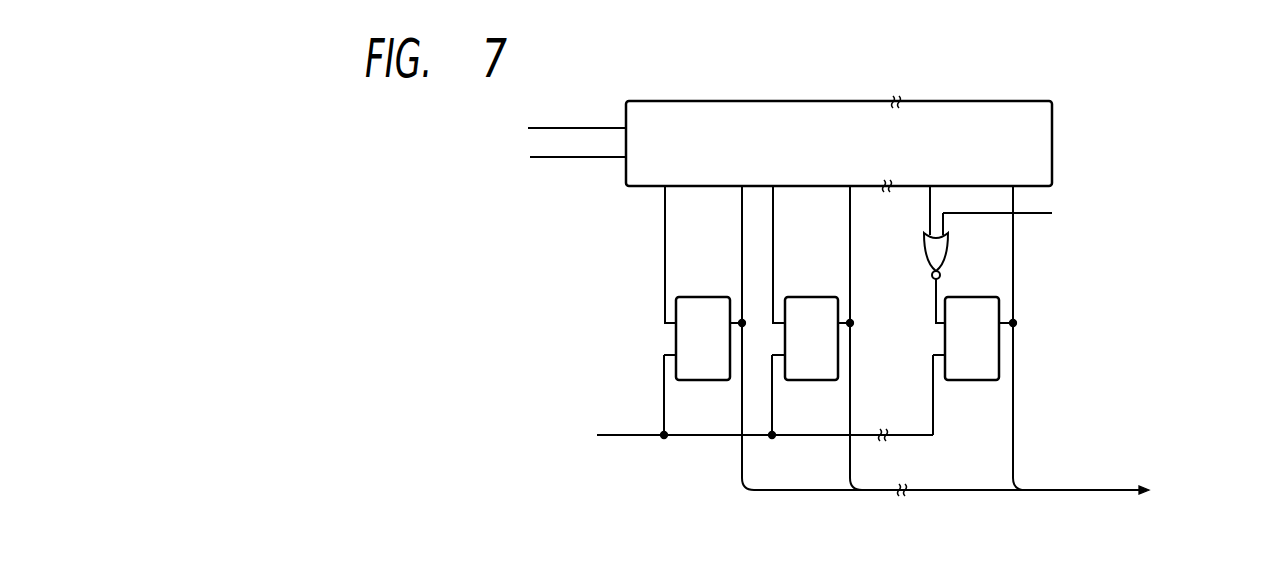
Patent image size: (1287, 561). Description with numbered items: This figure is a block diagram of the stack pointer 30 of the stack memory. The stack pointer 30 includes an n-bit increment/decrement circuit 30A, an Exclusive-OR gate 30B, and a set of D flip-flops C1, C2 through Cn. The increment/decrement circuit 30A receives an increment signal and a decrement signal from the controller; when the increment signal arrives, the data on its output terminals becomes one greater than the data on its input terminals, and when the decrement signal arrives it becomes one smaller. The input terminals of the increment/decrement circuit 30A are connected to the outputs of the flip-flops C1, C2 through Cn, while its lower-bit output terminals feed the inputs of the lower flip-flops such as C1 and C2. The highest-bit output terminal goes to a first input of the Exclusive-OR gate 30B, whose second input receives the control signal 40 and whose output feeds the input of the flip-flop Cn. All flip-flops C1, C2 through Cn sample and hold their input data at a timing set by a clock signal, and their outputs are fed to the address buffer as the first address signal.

The stack pointer 30 is at (1034, 82).
The n-bit increment/decrement circuit 30A is at (992, 102).
The Exclusive-OR gate 30B is at (924, 259).
The control signal 40 is at (1045, 214).
The D flip-flop C1 is at (708, 295).
The D flip-flop C2 is at (817, 295).
The D flip-flop Cn is at (983, 295).